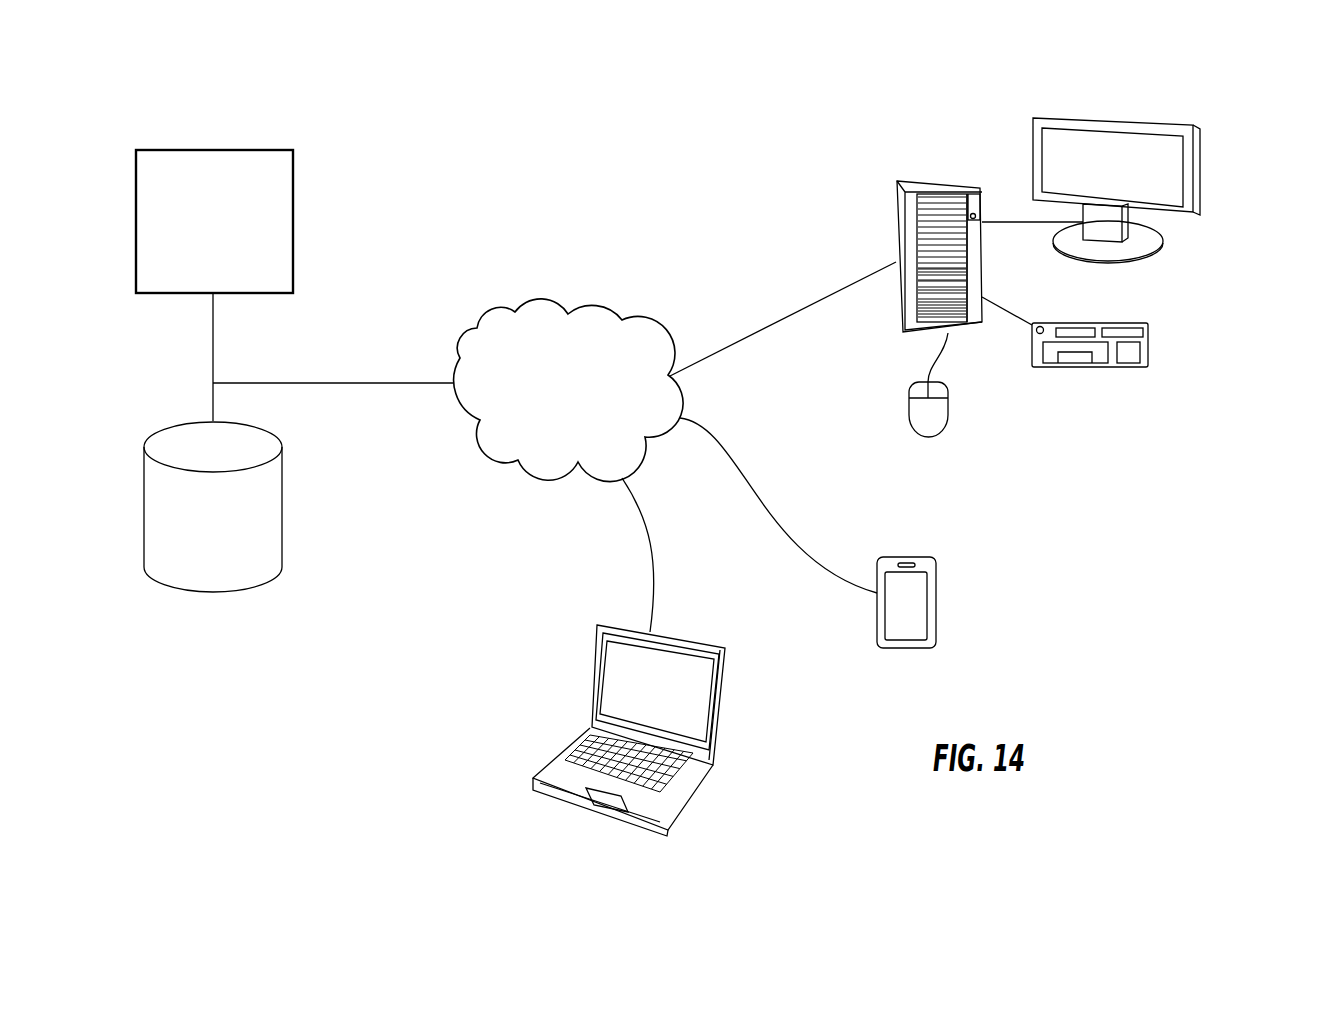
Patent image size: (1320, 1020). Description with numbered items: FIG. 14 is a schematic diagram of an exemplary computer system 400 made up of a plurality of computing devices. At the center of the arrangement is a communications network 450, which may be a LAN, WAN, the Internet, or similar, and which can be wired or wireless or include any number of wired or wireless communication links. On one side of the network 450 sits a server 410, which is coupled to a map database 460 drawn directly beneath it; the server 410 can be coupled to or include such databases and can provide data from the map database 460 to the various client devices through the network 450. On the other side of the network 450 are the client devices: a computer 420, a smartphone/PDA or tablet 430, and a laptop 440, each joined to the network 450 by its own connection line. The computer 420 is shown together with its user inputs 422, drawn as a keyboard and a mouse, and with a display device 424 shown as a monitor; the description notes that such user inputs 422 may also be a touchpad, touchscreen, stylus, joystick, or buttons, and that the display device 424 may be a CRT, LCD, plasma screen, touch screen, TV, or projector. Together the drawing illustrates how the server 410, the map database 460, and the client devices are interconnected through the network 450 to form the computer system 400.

The computer system 400 is at (733, 170).
The server 410 is at (293, 188).
The computer 420 is at (935, 181).
The user inputs 422 is at (1148, 342).
The display device 424 is at (1200, 163).
The smartphone/PDA or tablet 430 is at (936, 595).
The laptop 440 is at (723, 710).
The communications network 450 is at (594, 302).
The map database 460 is at (282, 494).